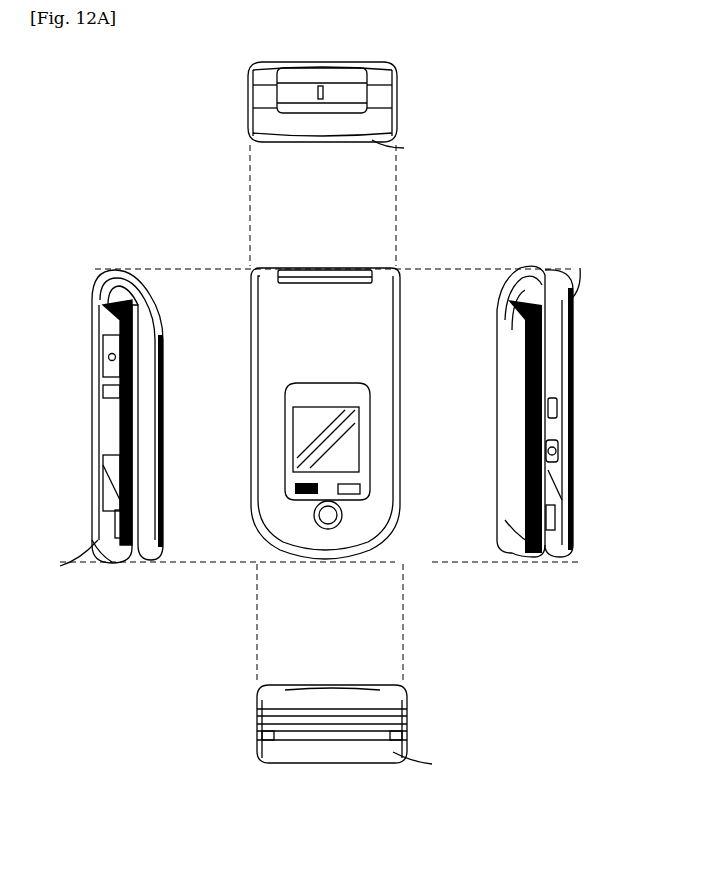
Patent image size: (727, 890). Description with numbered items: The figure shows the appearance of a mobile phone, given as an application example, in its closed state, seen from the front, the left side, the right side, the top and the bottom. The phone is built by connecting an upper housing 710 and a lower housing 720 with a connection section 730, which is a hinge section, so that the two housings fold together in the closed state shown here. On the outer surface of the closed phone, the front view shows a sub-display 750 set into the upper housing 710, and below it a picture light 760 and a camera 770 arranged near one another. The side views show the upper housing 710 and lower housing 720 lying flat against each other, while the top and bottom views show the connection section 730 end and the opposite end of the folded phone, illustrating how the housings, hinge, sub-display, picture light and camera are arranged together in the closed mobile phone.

The upper housing 710 is at (384, 64).
The lower housing 720 is at (325, 460).
The connection section (hinge section) 730 is at (355, 97).
The sub-display 750 is at (327, 458).
The picture light 760 is at (290, 494).
The camera 770 is at (336, 524).